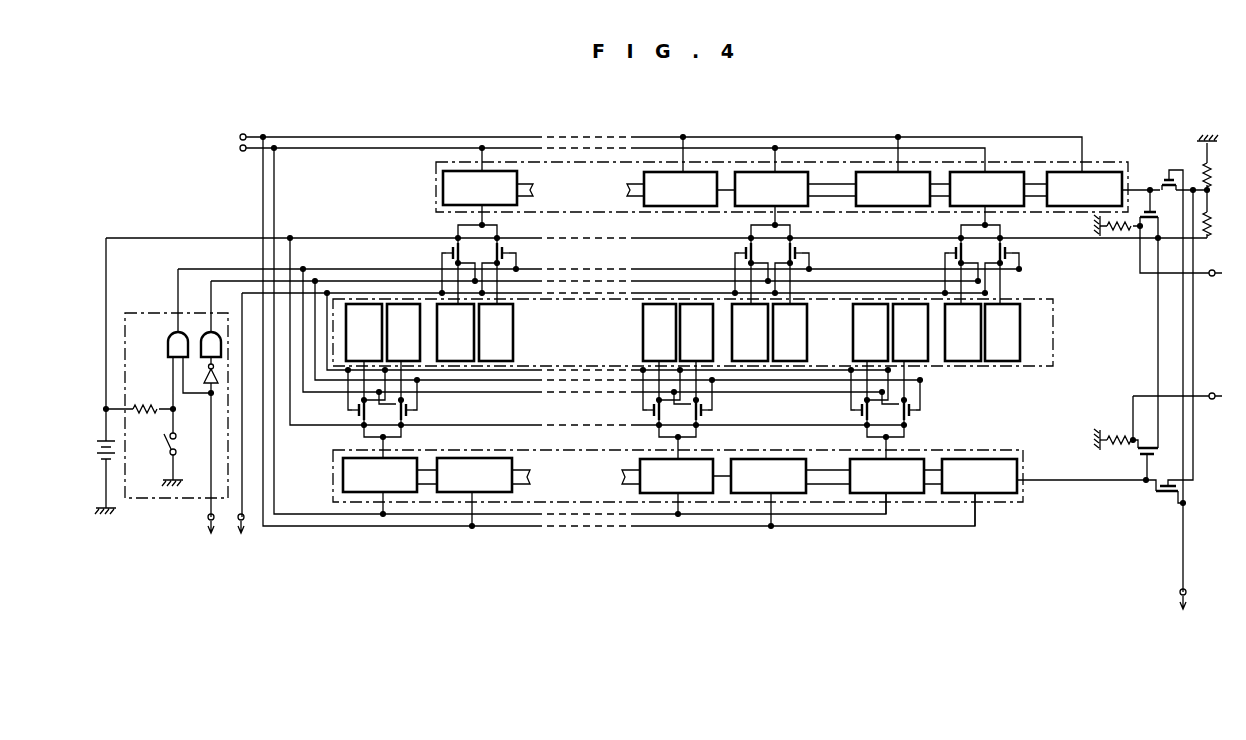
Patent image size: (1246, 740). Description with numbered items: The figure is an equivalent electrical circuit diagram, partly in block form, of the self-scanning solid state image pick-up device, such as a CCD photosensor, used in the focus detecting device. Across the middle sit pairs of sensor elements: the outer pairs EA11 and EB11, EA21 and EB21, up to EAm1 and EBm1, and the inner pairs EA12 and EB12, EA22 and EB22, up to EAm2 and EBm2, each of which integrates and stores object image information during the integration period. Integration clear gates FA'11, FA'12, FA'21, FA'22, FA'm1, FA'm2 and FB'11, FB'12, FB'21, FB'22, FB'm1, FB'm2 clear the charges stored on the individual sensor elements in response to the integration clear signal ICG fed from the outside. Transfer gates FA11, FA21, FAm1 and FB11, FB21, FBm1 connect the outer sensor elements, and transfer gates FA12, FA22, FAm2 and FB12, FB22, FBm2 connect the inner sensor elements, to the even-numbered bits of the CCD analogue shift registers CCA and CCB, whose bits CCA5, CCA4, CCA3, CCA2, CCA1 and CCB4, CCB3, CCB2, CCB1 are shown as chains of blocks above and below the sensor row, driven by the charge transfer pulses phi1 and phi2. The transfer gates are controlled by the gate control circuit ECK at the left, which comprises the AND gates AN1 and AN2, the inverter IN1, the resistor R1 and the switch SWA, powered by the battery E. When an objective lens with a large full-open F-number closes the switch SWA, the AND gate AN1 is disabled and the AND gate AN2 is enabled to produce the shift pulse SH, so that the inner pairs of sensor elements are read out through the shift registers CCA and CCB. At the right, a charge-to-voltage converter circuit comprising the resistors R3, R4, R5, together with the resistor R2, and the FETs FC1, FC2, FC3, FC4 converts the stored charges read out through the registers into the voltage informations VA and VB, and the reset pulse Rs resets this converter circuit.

The charge transfer pulse phi1 is at (641, 325).
The charge transfer pulse phi2 is at (592, 330).
The CCD analogue shift register CCA is at (810, 162).
The bit of shift register CCA CCA5 is at (672, 171).
The even-numbered bit of shift register CCA CCA4 is at (771, 186).
The bit of shift register CCA CCA3 is at (893, 171).
The even-numbered bit of shift register CCA CCA2 is at (987, 198).
The bit of shift register CCA CCA1 is at (1127, 189).
The transfer gate FAm2 is at (455, 240).
The integration clear gate FA'm2 is at (420, 268).
The integration clear gate FA'm1 is at (517, 259).
The transfer gate FAm1 is at (510, 253).
The transfer gate FA22 is at (748, 240).
The integration clear gate FA'22 is at (715, 268).
The integration clear gate FA'21 is at (811, 259).
The transfer gate FA21 is at (805, 253).
The transfer gate FA12 is at (959, 242).
The integration clear gate FA'12 is at (929, 269).
The integration clear gate FA'11 is at (1022, 260).
The transfer gate FA11 is at (1020, 253).
The sensor element EBm1 is at (364, 332).
The sensor element EBm2 is at (403, 332).
The sensor element EAm2 is at (455, 332).
The sensor element EAm1 is at (496, 332).
The sensor element EB21 is at (659, 332).
The sensor element EB22 is at (696, 332).
The sensor element EA22 is at (750, 332).
The sensor element EA21 is at (790, 332).
The sensor element EB11 is at (870, 332).
The sensor element EB12 is at (910, 332).
The sensor element EA12 is at (963, 332).
The sensor element EA11 is at (1002, 332).
The integration clear gate FB'm1 is at (356, 409).
The transfer gate FBm1 is at (362, 428).
The transfer gate FBm2 is at (406, 418).
The integration clear gate FB'm2 is at (417, 420).
The integration clear gate FB'21 is at (649, 410).
The transfer gate FB21 is at (658, 428).
The transfer gate FB22 is at (701, 418).
The integration clear gate FB'22 is at (714, 421).
The integration clear gate FB'11 is at (856, 410).
The transfer gate FB11 is at (866, 428).
The transfer gate FB12 is at (909, 418).
The integration clear gate FB'12 is at (925, 419).
The CCD analogue shift register CCB is at (707, 503).
The even-numbered bit of shift register CCB CCB4 is at (667, 486).
The bit of shift register CCB CCB3 is at (768, 492).
The even-numbered bit of shift register CCB CCB2 is at (887, 486).
The bit of shift register CCB CCB1 is at (1049, 492).
The FET FC1 is at (1164, 179).
The FET FC2 is at (1160, 319).
The FET FC3 is at (1153, 496).
The FET FC4 is at (1136, 457).
The resistor R1 is at (139, 420).
The resistor R2 is at (1124, 232).
The resistor R3 is at (1112, 433).
The resistor R4 is at (1214, 173).
The resistor R5 is at (1217, 224).
The voltage information VA is at (1192, 255).
The voltage information VB is at (1187, 413).
The reset pulse Rs is at (1181, 610).
The shift pulse SH is at (211, 534).
The integration clear signal ICG is at (242, 534).
The battery E is at (99, 460).
The gate control circuit ECK is at (167, 499).
The AND gate AN1 is at (169, 345).
The AND gate AN2 is at (209, 335).
The inverter IN1 is at (203, 376).
The switch SWA is at (183, 447).